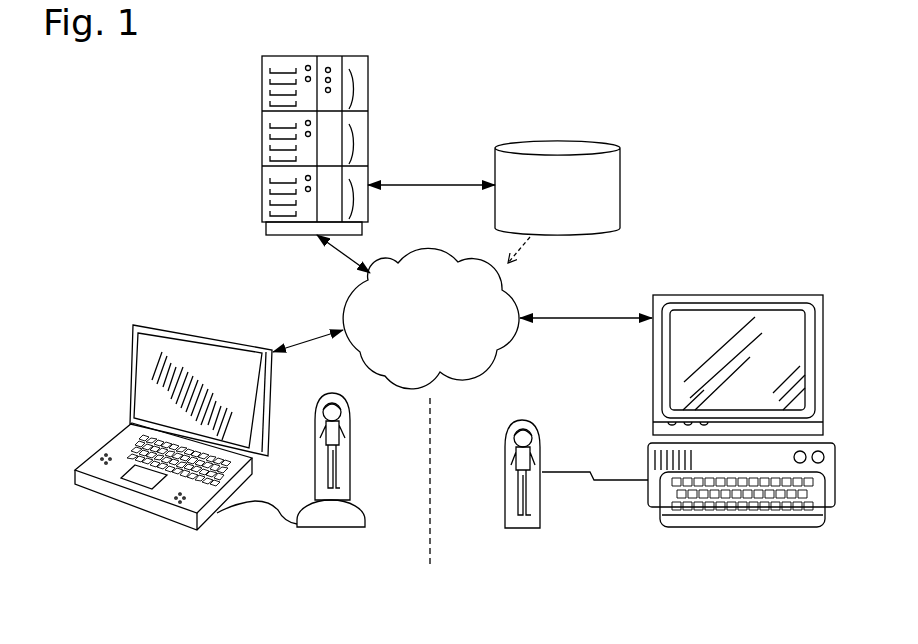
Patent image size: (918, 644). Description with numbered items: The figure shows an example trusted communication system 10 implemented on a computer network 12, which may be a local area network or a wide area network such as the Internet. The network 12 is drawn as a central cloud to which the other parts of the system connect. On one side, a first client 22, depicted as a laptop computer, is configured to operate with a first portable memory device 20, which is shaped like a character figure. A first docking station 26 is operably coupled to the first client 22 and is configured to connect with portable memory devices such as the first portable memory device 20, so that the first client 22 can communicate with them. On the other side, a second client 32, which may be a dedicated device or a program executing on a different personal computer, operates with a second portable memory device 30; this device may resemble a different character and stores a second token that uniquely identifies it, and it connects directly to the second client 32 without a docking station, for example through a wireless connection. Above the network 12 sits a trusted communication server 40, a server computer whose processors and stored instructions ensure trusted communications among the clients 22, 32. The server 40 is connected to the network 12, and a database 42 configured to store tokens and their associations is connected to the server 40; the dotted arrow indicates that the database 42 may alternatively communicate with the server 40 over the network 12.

The trusted communication system 10 is at (172, 171).
The computer network 12 is at (429, 248).
The first portable memory device 20 is at (337, 393).
The first client 22 is at (201, 334).
The first docking station 26 is at (366, 523).
The second portable memory device 30 is at (527, 420).
The second client 32 is at (776, 294).
The trusted communication server 40 is at (323, 56).
The database 42 is at (578, 142).